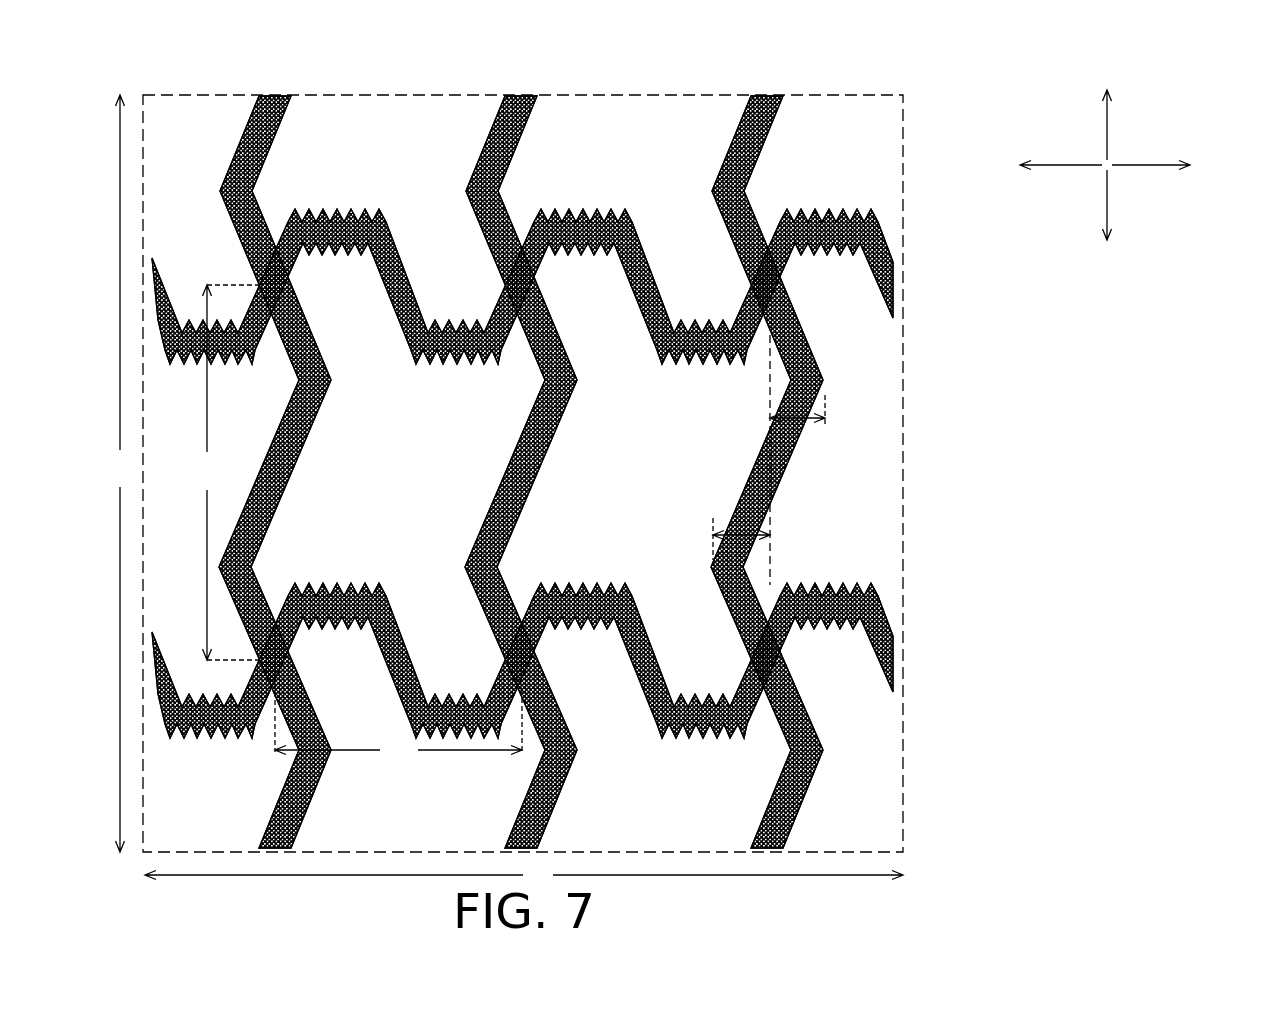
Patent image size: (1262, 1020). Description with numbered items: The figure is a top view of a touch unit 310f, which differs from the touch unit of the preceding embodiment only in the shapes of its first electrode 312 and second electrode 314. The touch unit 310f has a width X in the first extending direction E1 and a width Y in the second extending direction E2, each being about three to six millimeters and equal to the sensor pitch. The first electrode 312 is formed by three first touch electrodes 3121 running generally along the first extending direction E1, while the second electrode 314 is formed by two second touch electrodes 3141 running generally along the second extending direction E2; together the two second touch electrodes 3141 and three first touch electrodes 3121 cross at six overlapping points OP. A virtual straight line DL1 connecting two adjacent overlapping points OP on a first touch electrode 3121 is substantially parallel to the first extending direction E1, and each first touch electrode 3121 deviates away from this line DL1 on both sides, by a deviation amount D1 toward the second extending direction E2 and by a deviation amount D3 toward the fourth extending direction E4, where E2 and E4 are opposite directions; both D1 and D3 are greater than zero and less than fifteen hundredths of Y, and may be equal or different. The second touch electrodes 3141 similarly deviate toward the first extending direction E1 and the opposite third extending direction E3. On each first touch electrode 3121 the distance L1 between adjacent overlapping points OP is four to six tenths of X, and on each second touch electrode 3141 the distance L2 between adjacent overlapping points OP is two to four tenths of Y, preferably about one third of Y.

The first electrode 312 is at (797, 60).
The first touch electrode 3121 is at (272, 100).
The second electrode 314 is at (970, 253).
The second touch electrode 3141 is at (893, 266).
The overlapping point OP is at (273, 283).
The width in first extending direction X is at (119, 473).
The width in second extending direction Y is at (524, 877).
The distance between adjacent overlapping points on first touch electrode L1 is at (228, 472).
The distance between adjacent overlapping points on second touch electrode L2 is at (398, 713).
The deviation amount D1 is at (797, 403).
The deviation amount D3 is at (741, 530).
The virtual straight line DL1 is at (772, 560).
The first extending direction E1 is at (1110, 103).
The second extending direction E2 is at (1168, 164).
The third extending direction E3 is at (1110, 228).
The fourth extending direction E4 is at (1043, 164).
The touch unit 310f is at (1088, 870).